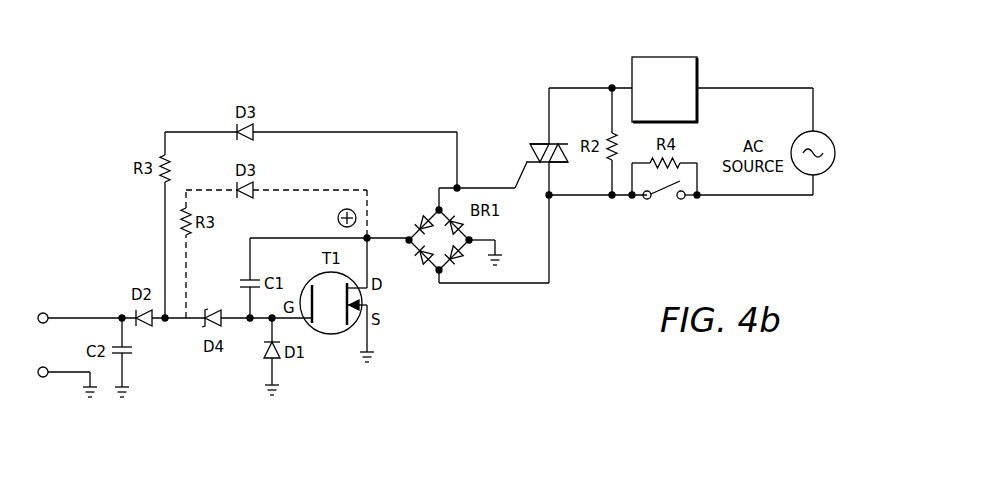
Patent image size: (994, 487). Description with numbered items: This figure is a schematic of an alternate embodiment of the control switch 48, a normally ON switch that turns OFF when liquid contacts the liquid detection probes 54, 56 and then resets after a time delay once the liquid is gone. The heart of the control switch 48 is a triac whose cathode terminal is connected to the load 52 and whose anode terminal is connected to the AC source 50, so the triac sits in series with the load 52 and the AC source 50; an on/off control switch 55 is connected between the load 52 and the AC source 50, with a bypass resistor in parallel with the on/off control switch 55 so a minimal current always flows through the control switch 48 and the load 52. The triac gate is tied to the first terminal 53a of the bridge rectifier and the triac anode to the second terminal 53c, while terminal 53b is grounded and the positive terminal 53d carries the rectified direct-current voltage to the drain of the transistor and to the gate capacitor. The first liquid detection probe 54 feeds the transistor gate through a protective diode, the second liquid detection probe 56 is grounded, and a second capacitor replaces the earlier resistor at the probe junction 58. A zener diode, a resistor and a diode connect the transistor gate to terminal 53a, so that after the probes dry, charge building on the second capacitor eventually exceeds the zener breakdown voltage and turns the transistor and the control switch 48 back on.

The control switch 48 is at (513, 85).
The AC source 50 is at (835, 152).
The load 52 is at (699, 70).
The first terminal of the bridge rectifier circuit 53a is at (437, 208).
The terminal of the bridge rectifier circuit 53b is at (474, 233).
The second terminal of the bridge rectifier circuit 53c is at (437, 273).
The positive terminal of the bridge rectifier circuit 53d is at (408, 237).
The first liquid detection probe 54 is at (43, 312).
The on/off control switch 55 is at (666, 200).
The second liquid detection probe 56 is at (43, 378).
The junction node 58 is at (165, 324).